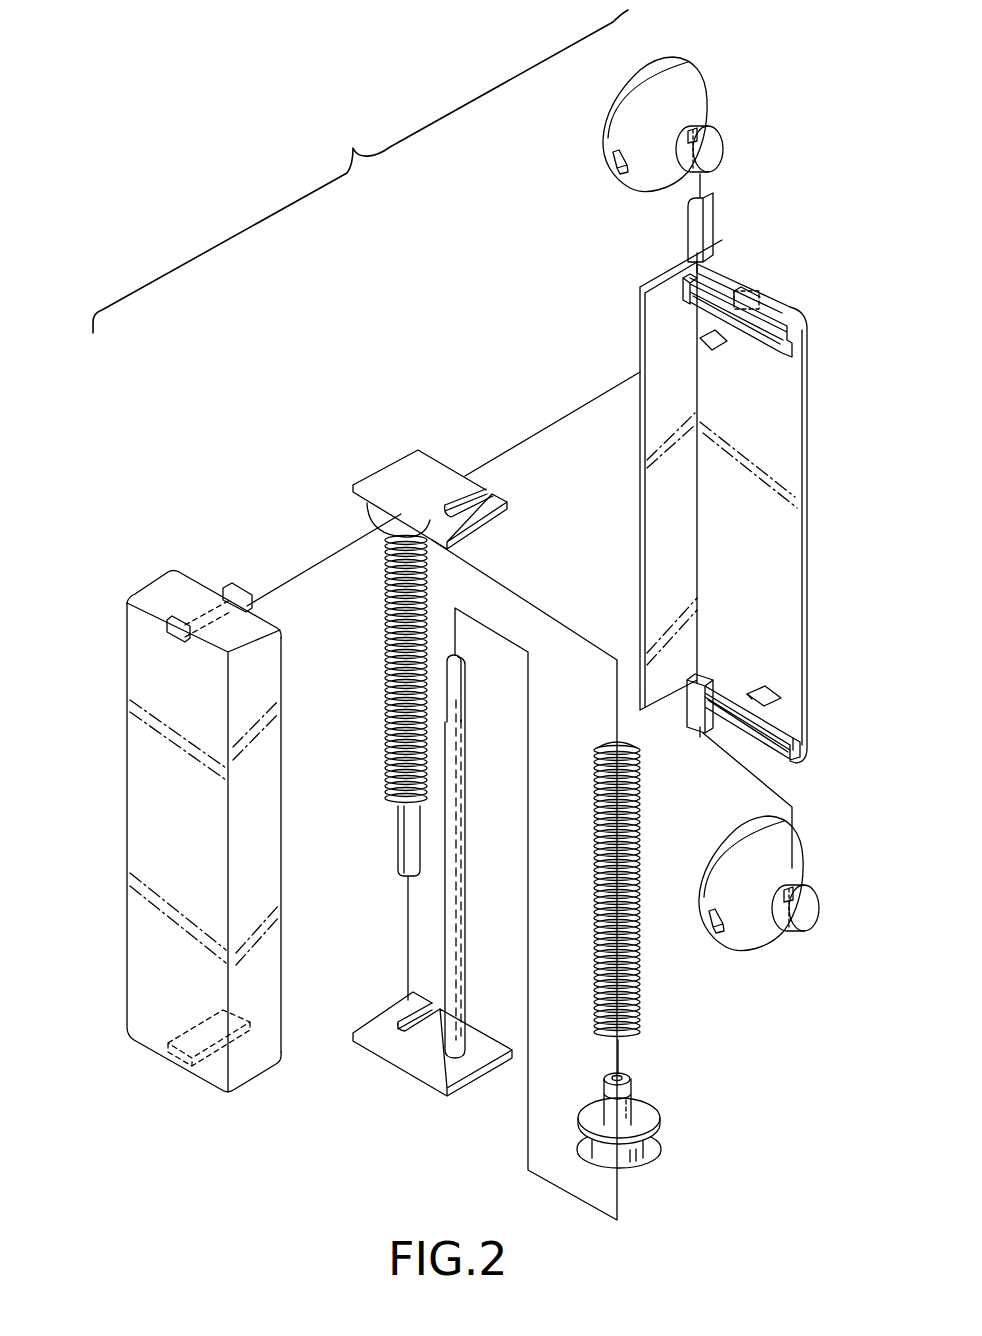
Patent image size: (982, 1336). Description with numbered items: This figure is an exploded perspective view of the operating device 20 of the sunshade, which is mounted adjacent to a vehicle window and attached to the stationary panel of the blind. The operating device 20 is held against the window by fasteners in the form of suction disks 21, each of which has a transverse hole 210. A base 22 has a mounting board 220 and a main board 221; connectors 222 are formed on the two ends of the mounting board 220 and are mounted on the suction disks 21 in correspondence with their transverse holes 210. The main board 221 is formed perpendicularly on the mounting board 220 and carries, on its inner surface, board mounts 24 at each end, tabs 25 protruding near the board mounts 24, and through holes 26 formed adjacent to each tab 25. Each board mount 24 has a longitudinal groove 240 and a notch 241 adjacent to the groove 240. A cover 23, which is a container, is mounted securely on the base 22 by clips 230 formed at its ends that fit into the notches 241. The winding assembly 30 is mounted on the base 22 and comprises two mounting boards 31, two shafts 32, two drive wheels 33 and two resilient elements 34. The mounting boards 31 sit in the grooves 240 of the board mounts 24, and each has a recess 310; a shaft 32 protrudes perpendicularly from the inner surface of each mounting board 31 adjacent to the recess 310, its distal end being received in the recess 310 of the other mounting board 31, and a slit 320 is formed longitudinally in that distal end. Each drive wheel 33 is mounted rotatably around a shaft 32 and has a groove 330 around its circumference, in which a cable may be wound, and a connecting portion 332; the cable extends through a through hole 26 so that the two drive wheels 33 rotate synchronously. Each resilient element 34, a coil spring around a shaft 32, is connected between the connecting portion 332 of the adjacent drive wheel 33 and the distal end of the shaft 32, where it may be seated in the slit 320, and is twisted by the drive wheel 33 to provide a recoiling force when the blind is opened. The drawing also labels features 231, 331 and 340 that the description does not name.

The operating device 20 is at (500, 216).
The suction disk 21 is at (630, 114).
The transverse hole 210 is at (704, 117).
The base 22 is at (730, 275).
The mounting board 220 is at (657, 306).
The main board 221 is at (788, 476).
The connector 222 is at (706, 222).
The cover 23 is at (146, 698).
The clip 230 is at (207, 603).
The tab 231 is at (255, 605).
The board mount 24 is at (772, 330).
The longitudinal groove 240 is at (766, 350).
The notch 241 is at (758, 296).
The tab 25 is at (710, 352).
The through hole 26 is at (747, 692).
The winding assembly 30 is at (407, 433).
The mounting board 31 is at (390, 487).
The recess 310 is at (492, 490).
The shaft 32 is at (410, 850).
The slit 320 is at (395, 826).
The drive wheel 33 is at (644, 1123).
The groove 330 is at (634, 1150).
The bottom edge 331 is at (632, 1166).
The connecting portion 332 is at (623, 1100).
The resilient element 34 is at (392, 645).
The spring end 340 is at (620, 740).